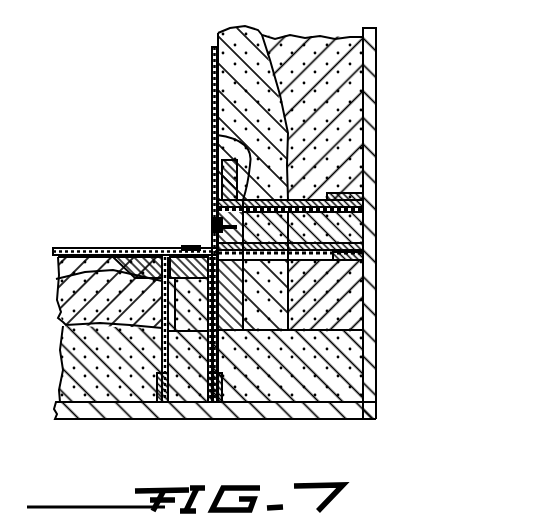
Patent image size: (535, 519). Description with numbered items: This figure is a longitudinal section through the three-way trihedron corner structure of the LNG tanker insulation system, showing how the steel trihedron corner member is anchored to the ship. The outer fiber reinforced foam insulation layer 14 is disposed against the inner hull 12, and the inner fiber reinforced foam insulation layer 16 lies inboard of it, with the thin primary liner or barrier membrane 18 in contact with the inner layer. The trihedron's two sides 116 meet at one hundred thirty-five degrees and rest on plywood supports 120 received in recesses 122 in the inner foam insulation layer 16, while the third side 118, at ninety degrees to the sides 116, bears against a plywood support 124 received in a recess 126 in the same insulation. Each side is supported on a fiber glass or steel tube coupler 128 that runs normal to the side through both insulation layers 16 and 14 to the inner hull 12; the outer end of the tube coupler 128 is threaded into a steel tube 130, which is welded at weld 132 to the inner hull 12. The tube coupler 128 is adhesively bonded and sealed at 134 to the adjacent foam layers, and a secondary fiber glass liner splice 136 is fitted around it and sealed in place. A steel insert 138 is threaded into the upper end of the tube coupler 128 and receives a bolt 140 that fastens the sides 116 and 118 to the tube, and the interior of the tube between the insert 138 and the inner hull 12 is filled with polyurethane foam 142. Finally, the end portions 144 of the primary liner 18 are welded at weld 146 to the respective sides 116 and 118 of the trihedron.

The inner hull 12 is at (75, 420).
The outer fiber reinforced foam insulation layer 14 is at (320, 392).
The inner fiber reinforced foam insulation layer 16 is at (343, 304).
The primary liner or barrier membrane 18 is at (171, 208).
The sides of trihedron corner member 116 is at (158, 250).
The third side of trihedron corner member 118 is at (212, 206).
The plywood support 120 is at (56, 279).
The recesses 122 is at (109, 292).
The plywood support 124 is at (250, 183).
The recess 126 is at (217, 136).
The tube coupler 128 is at (347, 243).
The steel tube 130 is at (214, 419).
The weld 132 is at (143, 418).
The adhesive bond and seal 134 is at (322, 197).
The secondary fiber glass liner splice 136 is at (246, 331).
The steel insert 138 is at (265, 295).
The bolt 140 is at (198, 250).
The polyurethane foam 142 is at (160, 366).
The end portions of primary liner 144 is at (212, 78).
The weld 146 is at (212, 192).